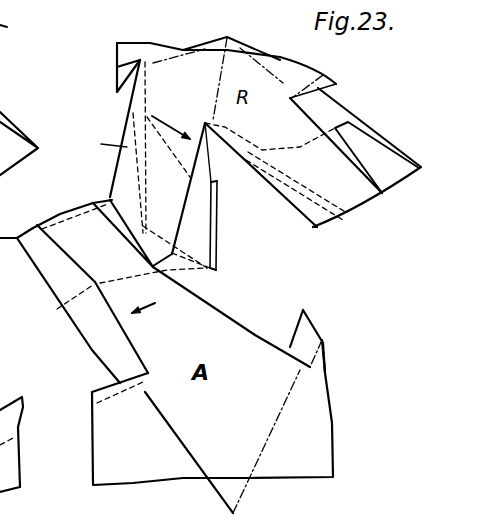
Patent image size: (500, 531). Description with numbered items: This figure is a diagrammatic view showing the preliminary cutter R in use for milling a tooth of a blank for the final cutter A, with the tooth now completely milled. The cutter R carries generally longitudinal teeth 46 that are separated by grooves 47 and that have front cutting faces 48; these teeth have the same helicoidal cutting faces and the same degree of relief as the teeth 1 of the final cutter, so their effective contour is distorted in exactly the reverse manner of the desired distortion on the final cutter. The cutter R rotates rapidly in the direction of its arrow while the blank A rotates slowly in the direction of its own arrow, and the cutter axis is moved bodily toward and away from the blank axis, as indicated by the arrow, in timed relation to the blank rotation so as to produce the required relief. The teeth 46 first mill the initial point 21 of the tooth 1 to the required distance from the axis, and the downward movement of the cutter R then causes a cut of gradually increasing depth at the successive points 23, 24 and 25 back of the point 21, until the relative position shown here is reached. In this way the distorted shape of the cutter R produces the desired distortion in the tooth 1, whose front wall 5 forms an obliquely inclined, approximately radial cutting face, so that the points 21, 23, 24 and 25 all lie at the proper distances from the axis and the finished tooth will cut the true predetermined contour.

The longitudinal teeth 1 is at (75, 212).
The front walls 5 is at (38, 273).
The initial point 21 is at (57, 310).
The point 23 is at (31, 230).
The point 24 is at (40, 217).
The point 25 is at (95, 282).
The longitudinal teeth 46 is at (369, 232).
The grooves 47 is at (267, 220).
The front cutting faces 48 is at (217, 228).